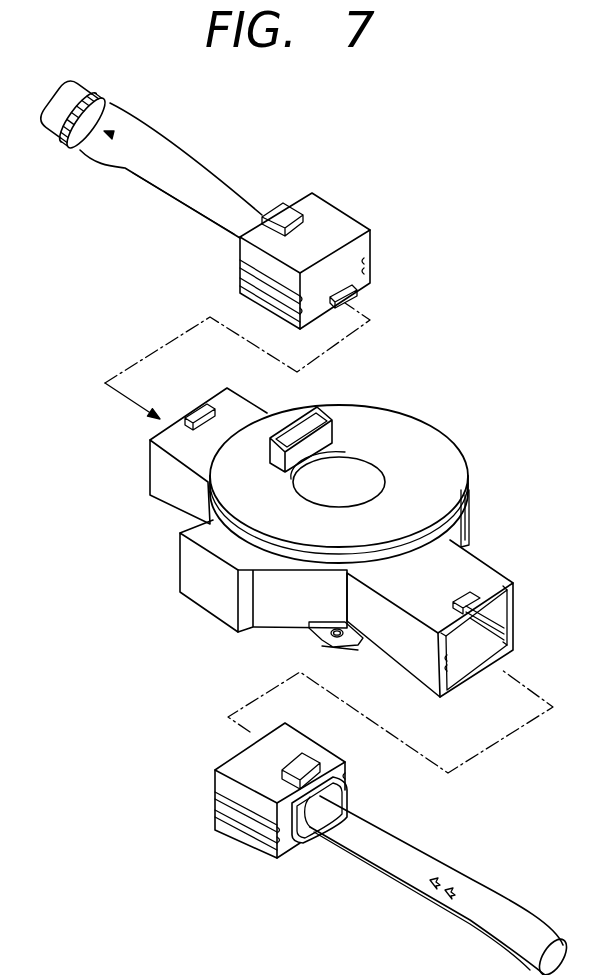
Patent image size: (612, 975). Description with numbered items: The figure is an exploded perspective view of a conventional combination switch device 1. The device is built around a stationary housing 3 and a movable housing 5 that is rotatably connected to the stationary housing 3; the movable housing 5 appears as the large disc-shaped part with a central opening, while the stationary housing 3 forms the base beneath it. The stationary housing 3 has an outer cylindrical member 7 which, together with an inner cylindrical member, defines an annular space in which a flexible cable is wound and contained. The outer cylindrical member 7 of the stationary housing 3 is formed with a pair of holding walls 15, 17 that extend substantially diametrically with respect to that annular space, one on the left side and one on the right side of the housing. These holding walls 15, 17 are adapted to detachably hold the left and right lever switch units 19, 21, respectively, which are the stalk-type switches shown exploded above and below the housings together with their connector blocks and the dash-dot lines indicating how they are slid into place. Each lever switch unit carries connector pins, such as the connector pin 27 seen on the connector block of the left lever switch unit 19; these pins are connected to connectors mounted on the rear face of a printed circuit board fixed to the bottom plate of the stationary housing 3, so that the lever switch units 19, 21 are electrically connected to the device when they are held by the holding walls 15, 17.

The combination switch device 1 is at (323, 403).
The stationary housing 3 is at (211, 611).
The movable housing 5 is at (450, 432).
The outer cylindrical member 7 is at (462, 527).
The holding wall 15 is at (157, 472).
The holding wall 17 is at (483, 568).
The left lever switch unit 19 is at (191, 166).
The right lever switch unit 21 is at (423, 852).
The connector pin 27 is at (358, 301).